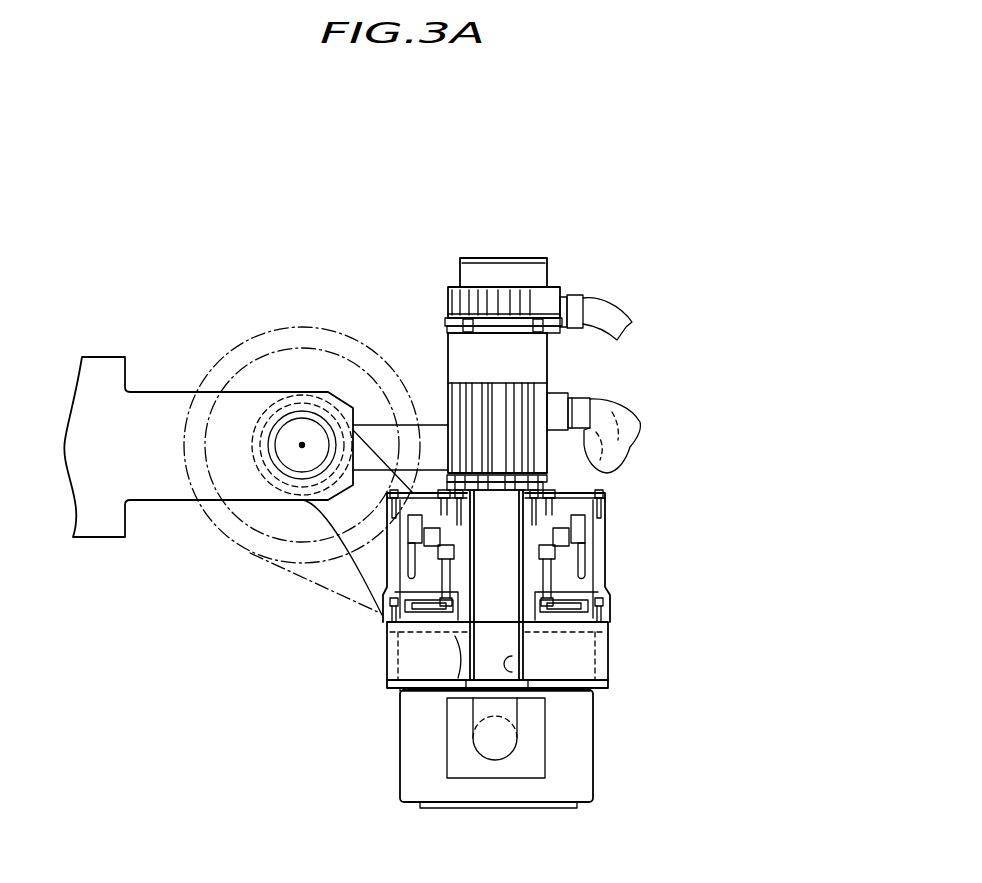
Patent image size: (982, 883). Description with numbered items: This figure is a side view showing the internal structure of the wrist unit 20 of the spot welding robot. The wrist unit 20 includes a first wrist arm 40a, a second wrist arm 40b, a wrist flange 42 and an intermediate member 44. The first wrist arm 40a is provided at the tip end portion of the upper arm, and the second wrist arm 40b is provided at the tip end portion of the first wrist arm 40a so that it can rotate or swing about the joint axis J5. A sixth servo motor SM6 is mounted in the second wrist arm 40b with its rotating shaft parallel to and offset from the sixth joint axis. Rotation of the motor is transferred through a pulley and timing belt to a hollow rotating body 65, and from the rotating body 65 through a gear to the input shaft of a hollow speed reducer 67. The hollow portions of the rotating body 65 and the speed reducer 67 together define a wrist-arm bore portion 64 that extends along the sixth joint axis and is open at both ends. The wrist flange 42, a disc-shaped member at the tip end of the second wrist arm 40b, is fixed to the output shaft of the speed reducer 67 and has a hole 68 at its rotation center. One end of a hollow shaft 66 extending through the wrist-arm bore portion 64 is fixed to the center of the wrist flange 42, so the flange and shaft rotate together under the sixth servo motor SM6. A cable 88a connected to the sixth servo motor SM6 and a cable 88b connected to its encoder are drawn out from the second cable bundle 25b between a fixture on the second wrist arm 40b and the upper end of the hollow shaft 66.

The wrist unit 20 is at (641, 171).
The sixth servo motor SM6 is at (488, 258).
The joint axis J5 is at (302, 445).
The first wrist arm 40a is at (168, 490).
The second wrist arm 40b is at (600, 525).
The cable connected to the encoder 88b is at (607, 313).
The cable connected to the sixth servo motor 88a is at (560, 396).
The second cable bundle 25b is at (592, 392).
The rotating body 65 is at (565, 568).
The hollow shaft 66 is at (595, 603).
The speed reducer 67 is at (583, 658).
The wrist-arm bore portion 64 is at (598, 685).
The wrist flange 42 is at (467, 686).
The hole 68 is at (480, 686).
The intermediate member 44 is at (572, 745).